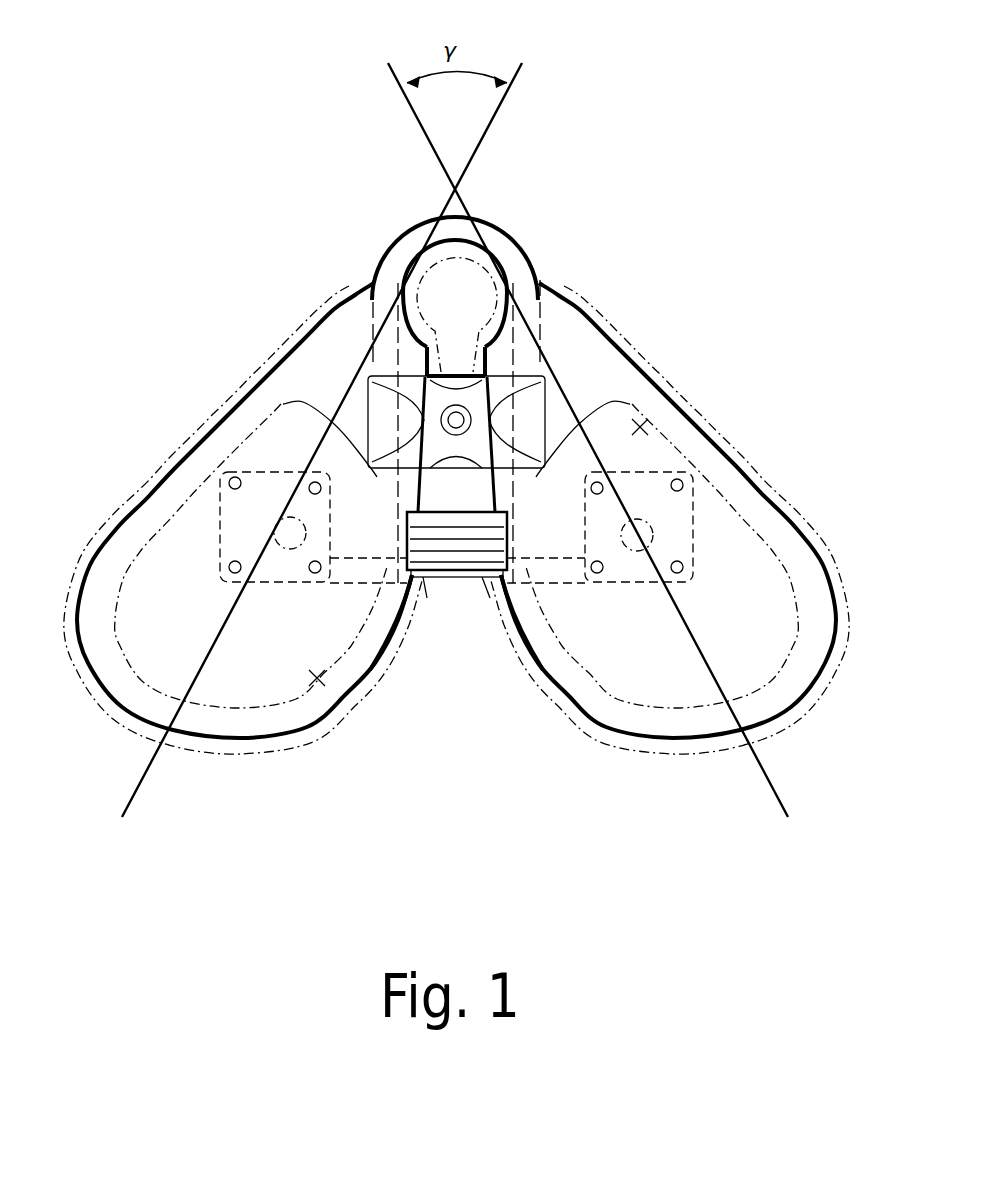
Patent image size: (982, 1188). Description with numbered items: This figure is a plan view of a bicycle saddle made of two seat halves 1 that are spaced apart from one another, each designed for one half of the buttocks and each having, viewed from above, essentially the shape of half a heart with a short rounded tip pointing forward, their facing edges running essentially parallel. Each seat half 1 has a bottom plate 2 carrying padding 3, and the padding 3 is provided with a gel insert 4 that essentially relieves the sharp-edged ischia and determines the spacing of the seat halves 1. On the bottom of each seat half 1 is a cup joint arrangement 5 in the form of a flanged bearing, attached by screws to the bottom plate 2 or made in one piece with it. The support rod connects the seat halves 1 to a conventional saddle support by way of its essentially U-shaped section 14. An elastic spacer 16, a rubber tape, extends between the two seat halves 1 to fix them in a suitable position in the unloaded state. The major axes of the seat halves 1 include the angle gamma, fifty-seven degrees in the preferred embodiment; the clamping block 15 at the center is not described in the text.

The seat halves 1 is at (219, 800).
The bottom plate 2 is at (355, 667).
The padding 3 is at (198, 745).
The gel insert 4 is at (670, 395).
The cup joint arrangement 5 is at (247, 457).
The U-shaped section 14 is at (377, 280).
The clamping block 15 is at (437, 578).
The elastic spacer 16 is at (473, 543).